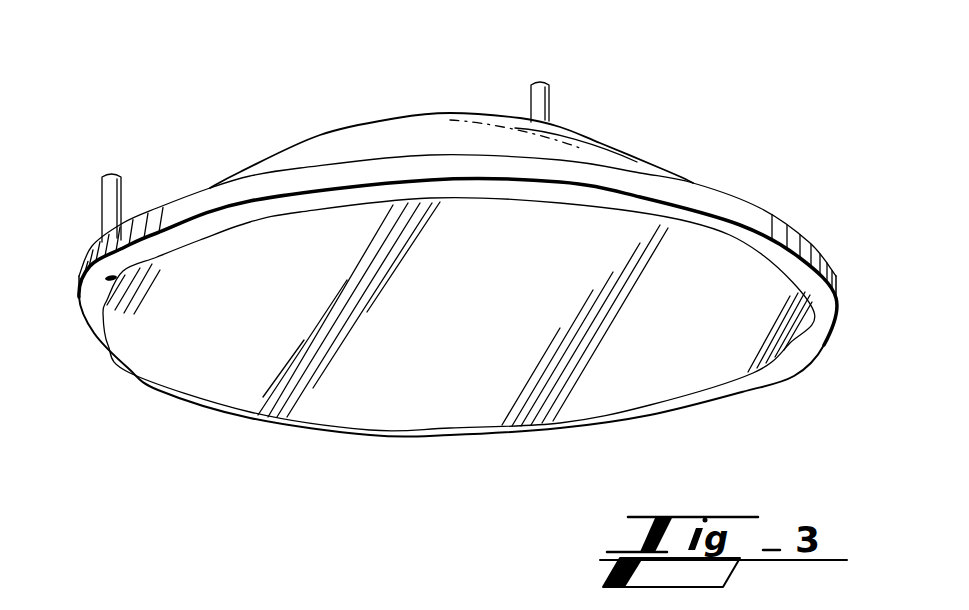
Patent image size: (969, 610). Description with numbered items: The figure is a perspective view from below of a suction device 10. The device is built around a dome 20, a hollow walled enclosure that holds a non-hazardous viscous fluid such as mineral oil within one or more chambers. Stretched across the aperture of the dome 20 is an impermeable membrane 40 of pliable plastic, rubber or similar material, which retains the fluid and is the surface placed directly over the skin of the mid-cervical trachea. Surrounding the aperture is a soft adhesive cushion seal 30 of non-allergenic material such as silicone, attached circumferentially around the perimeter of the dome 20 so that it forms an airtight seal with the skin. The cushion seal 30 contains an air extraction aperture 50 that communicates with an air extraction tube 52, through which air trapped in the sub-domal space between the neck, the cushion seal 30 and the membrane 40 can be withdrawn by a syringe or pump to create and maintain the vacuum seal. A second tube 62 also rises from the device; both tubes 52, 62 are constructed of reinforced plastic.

The suction device 10 is at (429, 62).
The dome 20 is at (374, 132).
The cushion seal 30 is at (720, 204).
The membrane 40 is at (432, 374).
The air extraction aperture 50 is at (114, 282).
The air extraction tube 52 is at (102, 206).
The tube 62 is at (550, 100).